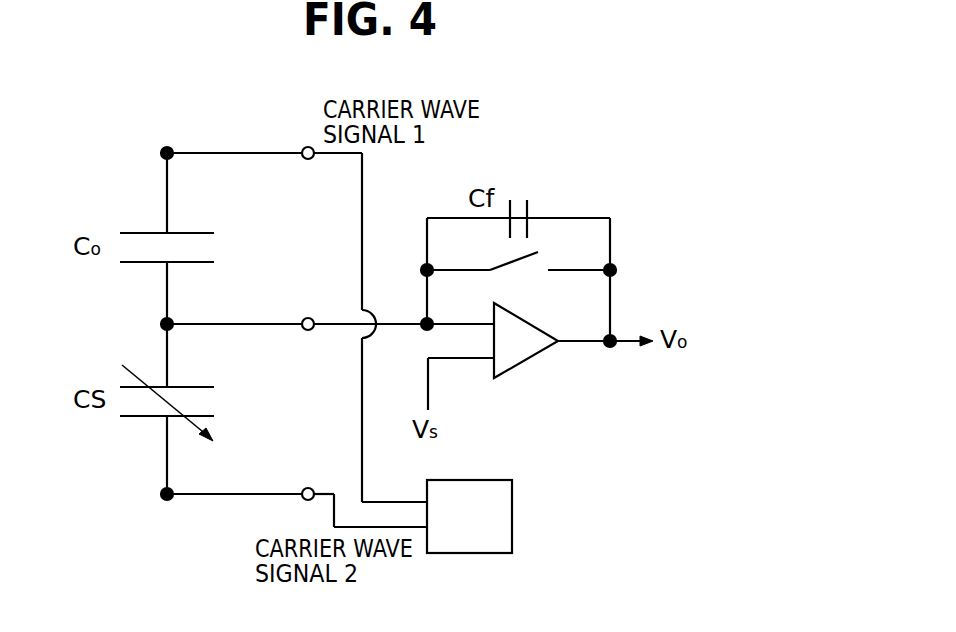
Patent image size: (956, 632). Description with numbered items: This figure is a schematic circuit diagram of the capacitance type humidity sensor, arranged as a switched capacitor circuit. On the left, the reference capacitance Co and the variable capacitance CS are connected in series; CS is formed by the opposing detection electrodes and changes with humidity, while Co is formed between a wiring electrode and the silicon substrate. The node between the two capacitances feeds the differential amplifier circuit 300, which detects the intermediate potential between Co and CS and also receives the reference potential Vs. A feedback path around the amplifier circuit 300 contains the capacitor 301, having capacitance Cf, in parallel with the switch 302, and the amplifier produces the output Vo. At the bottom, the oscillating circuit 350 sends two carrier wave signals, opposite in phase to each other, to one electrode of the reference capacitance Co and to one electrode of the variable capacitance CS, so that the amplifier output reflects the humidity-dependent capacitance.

The differential amplifier circuit 300 is at (535, 360).
The capacitor 301 is at (517, 200).
The switch 302 is at (537, 250).
The oscillating circuit 350 is at (512, 505).